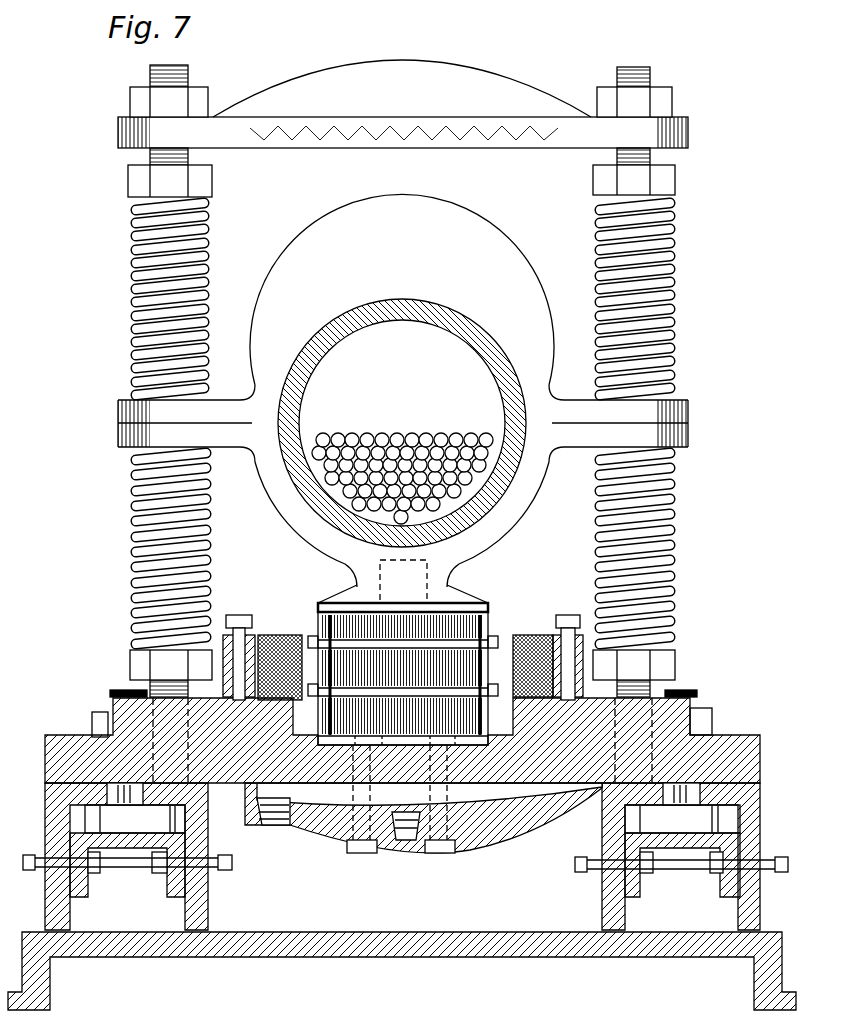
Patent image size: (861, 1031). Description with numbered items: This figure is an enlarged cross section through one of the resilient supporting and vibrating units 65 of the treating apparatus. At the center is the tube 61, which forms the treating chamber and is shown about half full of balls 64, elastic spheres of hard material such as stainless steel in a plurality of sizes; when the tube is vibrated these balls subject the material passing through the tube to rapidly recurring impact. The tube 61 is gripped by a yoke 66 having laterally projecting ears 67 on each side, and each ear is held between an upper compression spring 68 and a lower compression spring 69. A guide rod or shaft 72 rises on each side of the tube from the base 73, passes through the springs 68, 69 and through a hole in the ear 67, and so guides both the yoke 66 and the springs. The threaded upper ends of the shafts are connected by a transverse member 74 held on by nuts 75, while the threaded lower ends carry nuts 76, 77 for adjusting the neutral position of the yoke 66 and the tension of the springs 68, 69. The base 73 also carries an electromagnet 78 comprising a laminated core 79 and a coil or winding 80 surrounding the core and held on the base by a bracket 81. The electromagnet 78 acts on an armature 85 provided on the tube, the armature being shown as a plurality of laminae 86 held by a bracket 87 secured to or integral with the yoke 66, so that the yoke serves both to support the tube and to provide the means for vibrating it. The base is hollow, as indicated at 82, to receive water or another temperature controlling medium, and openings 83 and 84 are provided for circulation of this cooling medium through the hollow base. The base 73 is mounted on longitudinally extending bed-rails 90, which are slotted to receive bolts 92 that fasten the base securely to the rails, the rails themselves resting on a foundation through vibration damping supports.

The tube 61 is at (500, 352).
The balls 64 is at (427, 432).
The supporting and vibrating unit 65 is at (688, 192).
The yoke 66 is at (500, 300).
The ears 67 is at (118, 410).
The compression spring 68 is at (132, 310).
The compression spring 69 is at (135, 590).
The guide rod or shaft 72 is at (153, 73).
The base 73 is at (577, 750).
The transverse member 74 is at (396, 135).
The nut 75 is at (130, 100).
The nut 76 is at (130, 663).
The nut 77 is at (676, 660).
The electromagnet 78 is at (496, 662).
The laminated core 79 is at (326, 625).
The coil or winding 80 is at (537, 638).
The bracket 81 is at (232, 634).
The hollow of base 82 is at (498, 788).
The opening 83 is at (269, 824).
The opening 84 is at (405, 835).
The armature 85 is at (367, 617).
The laminae 86 is at (460, 623).
The bracket 87 is at (380, 660).
The bed-rail 90 is at (58, 813).
The bolt 92 is at (112, 692).